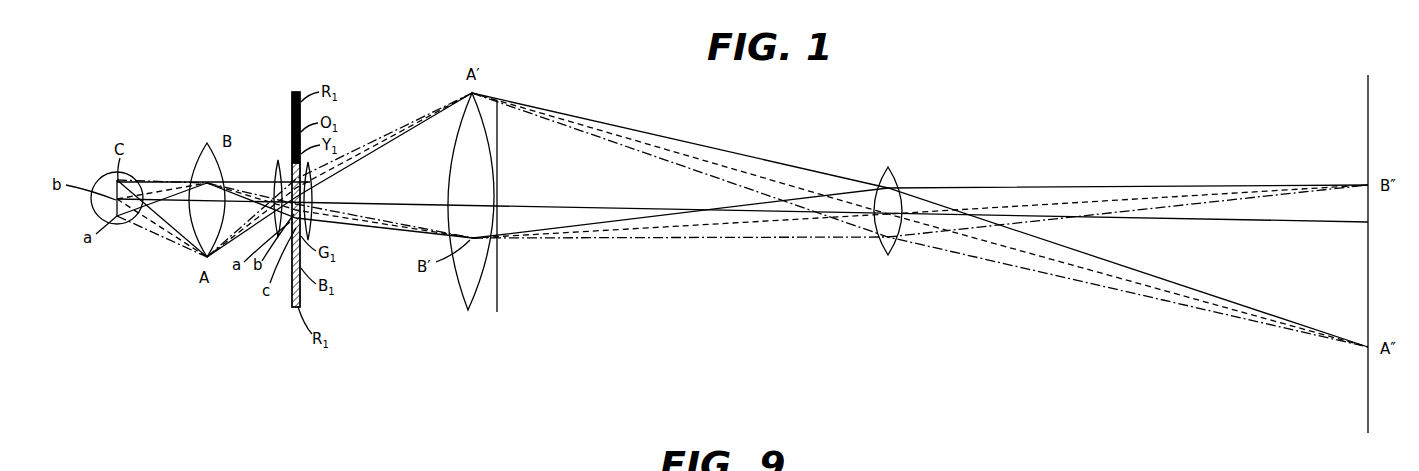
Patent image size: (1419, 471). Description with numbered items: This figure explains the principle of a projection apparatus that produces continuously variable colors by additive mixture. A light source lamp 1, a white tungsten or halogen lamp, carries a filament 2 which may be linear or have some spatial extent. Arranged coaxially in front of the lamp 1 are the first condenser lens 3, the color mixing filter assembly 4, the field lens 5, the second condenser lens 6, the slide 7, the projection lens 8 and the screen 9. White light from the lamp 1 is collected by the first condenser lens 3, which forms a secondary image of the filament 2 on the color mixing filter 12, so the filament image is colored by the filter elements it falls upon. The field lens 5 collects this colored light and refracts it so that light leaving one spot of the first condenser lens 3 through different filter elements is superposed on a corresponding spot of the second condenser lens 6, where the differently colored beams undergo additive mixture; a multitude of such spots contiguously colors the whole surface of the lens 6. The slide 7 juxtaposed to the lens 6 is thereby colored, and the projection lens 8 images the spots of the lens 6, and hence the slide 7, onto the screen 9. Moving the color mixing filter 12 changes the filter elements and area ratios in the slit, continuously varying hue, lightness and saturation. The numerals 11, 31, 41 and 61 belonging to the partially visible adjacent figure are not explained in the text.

In FIG. 1, the light source lamp 1 is at (100, 178).
In FIG. 1, the filament 2 is at (110, 207).
In FIG. 1, the first condenser lens 3 is at (196, 163).
In FIG. 1, the color mixing filter assembly 4 is at (297, 88).
In FIG. 1, the color mixing filter 12 is at (292, 100).
In FIG. 1, the field lens 5 is at (278, 166).
In FIG. 1, the second condenser lens 6 is at (452, 130).
In FIG. 1, the slide 7 is at (504, 118).
In FIG. 1, the projection lens 8 is at (896, 172).
In FIG. 1, the screen 9 is at (1370, 290).
In FIG. 9, the light source (FIG. 9) 11 is at (189, 470).
In FIG. 9, the condenser lens (FIG. 9) 31 is at (288, 464).
In FIG. 9, the filter (FIG. 9) 41 is at (347, 464).
In FIG. 9, the lens (FIG. 9) 61 is at (463, 466).